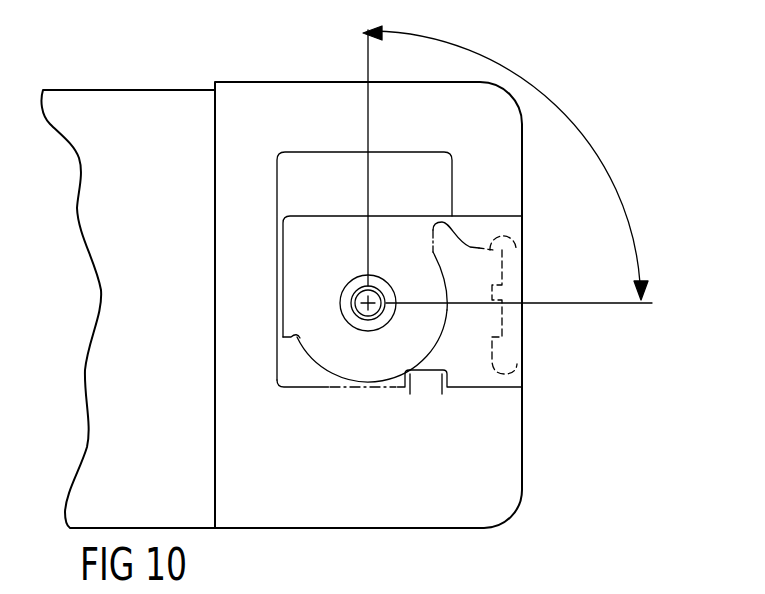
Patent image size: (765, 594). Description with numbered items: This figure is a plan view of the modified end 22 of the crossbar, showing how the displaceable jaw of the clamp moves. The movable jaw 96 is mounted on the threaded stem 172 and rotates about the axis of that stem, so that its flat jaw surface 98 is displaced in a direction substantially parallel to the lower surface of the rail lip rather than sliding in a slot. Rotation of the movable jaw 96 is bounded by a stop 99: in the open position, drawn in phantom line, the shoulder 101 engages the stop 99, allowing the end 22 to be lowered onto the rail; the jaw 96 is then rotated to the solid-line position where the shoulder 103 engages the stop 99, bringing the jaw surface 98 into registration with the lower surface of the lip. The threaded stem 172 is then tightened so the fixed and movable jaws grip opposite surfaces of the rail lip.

The end 22 is at (538, 428).
The shoulder 101 is at (292, 340).
The jaw surface 98 is at (497, 383).
The stop 99 is at (443, 392).
The movable jaw 96 is at (333, 388).
The shoulder 103 is at (508, 248).
The threaded stem 172 is at (378, 310).